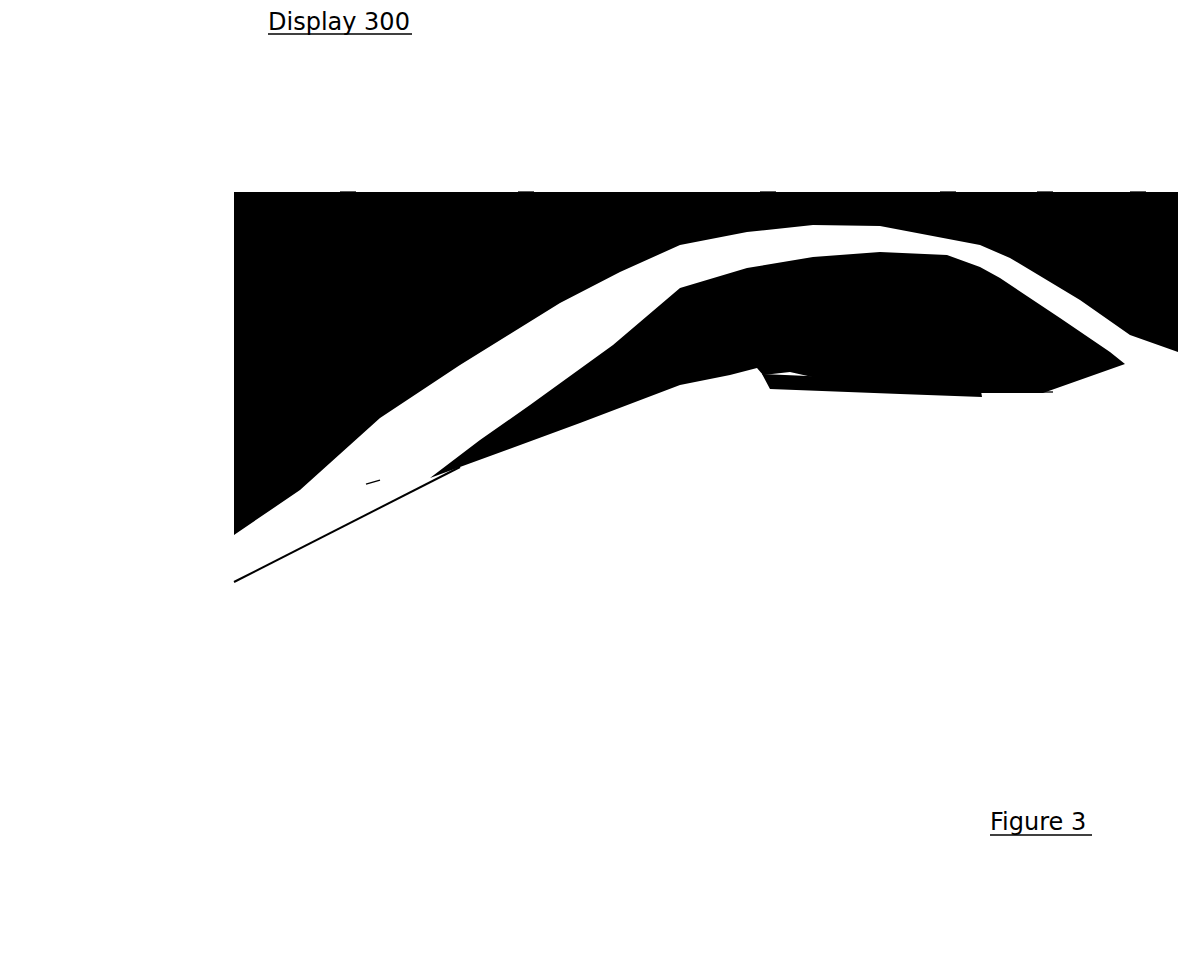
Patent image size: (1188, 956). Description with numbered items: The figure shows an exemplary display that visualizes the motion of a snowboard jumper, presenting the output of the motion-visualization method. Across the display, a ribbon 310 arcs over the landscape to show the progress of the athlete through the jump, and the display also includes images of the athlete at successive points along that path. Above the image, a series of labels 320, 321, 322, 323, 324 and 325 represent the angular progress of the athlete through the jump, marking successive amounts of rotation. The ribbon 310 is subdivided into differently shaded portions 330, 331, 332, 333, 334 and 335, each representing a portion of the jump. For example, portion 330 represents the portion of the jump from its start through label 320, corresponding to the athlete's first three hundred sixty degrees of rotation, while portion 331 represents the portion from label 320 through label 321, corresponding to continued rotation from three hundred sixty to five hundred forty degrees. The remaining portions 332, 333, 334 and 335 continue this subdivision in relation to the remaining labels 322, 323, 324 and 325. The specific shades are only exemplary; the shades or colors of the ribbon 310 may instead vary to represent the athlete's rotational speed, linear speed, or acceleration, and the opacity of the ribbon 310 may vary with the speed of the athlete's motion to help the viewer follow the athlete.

The ribbon 310 is at (240, 468).
The label 320 is at (1137, 191).
The label 321 is at (1043, 191).
The label 322 is at (948, 191).
The label 323 is at (768, 190).
The label 324 is at (526, 190).
The label 325 is at (347, 190).
The portion 330 is at (1100, 367).
The portion 331 is at (1045, 393).
The portion 332 is at (960, 393).
The portion 333 is at (827, 387).
The portion 334 is at (573, 423).
The portion 335 is at (372, 482).